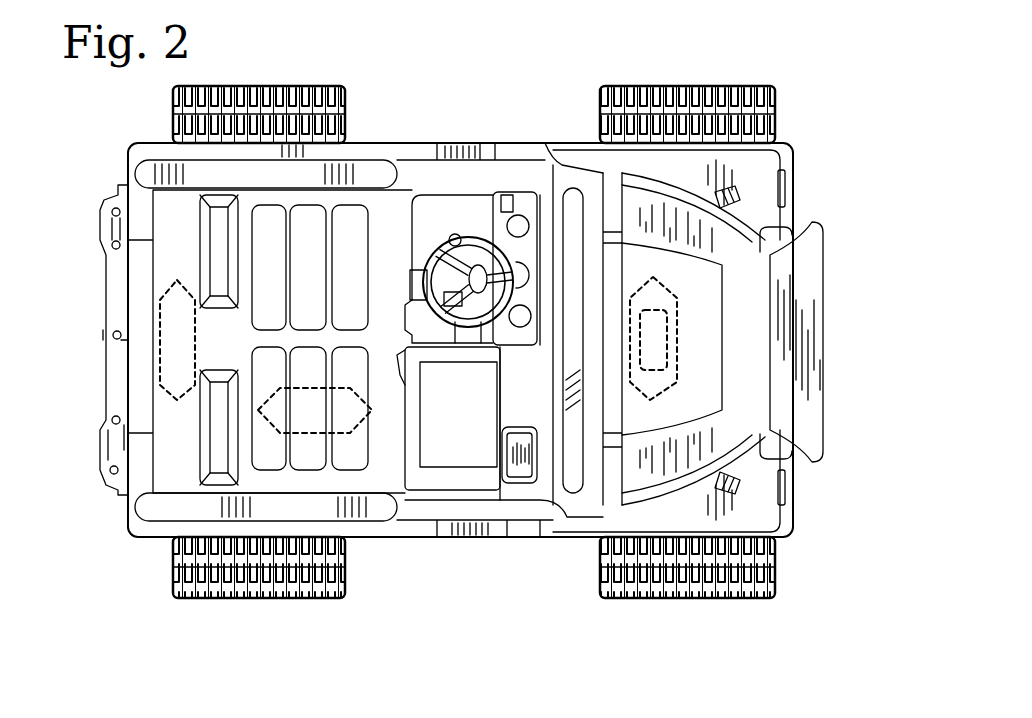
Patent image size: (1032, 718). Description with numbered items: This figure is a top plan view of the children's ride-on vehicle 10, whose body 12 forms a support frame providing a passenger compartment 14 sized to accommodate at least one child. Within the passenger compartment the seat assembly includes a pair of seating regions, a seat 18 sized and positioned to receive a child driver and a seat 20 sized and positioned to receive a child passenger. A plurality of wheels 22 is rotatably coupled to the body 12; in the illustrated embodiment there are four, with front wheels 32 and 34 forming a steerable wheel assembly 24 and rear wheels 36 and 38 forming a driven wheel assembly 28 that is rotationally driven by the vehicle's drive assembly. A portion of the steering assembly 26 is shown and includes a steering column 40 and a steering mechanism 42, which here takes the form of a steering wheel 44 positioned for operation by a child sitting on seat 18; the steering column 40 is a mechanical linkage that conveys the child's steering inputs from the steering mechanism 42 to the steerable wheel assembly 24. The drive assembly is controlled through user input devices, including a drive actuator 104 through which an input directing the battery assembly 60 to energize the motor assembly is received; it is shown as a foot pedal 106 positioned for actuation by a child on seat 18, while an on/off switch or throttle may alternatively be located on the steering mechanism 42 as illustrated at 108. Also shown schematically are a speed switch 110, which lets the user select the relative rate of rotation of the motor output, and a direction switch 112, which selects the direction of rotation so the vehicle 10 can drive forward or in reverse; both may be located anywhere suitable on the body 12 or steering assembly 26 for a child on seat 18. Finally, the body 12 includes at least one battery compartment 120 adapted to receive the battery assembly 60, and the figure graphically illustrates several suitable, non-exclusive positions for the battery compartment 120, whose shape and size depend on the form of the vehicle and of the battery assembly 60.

The children's ride-on vehicle 10 is at (872, 194).
The body 12 is at (828, 296).
The passenger compartment 14 is at (462, 178).
The seat 18 is at (218, 220).
The seat 20 is at (218, 415).
The wheels 22 is at (145, 118).
The steerable wheel assembly 24 is at (736, 84).
The steering assembly 26 is at (534, 294).
The driven wheel assembly 28 is at (292, 84).
The front wheel 32 is at (636, 86).
The front wheel 34 is at (655, 598).
The rear wheel 36 is at (198, 86).
The rear wheel 38 is at (225, 597).
The steering column 40 is at (528, 282).
The steering mechanism 42 is at (438, 338).
The steering wheel 44 is at (480, 347).
The battery assembly 60 is at (670, 322).
The drive actuator 104 is at (452, 292).
The foot pedal 106 is at (445, 288).
The on/off switch or throttle 108 is at (452, 240).
The speed switch 110 is at (505, 188).
The direction switch 112 is at (513, 188).
The battery compartment 120 is at (168, 386).